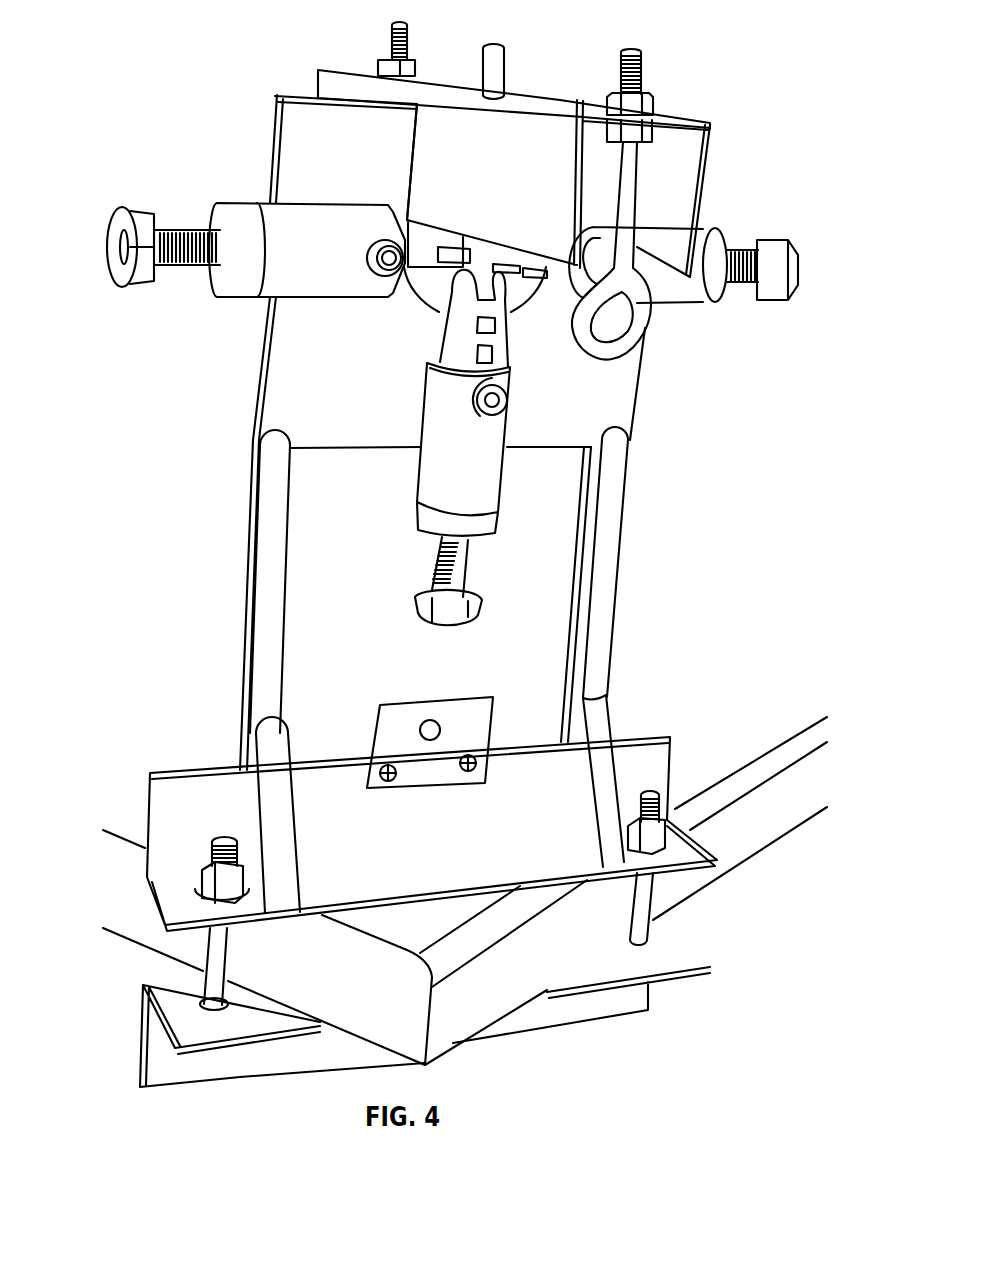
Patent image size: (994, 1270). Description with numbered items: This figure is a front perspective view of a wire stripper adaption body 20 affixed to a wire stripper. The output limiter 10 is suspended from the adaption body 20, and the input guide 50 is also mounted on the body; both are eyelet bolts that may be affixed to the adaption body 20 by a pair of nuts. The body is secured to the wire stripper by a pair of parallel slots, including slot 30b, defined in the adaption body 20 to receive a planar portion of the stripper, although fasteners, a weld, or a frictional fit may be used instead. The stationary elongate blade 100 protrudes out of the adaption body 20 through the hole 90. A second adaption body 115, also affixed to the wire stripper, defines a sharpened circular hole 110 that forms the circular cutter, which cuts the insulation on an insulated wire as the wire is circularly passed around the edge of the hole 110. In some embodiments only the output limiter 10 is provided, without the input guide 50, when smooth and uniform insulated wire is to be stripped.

The output limiter 10 is at (637, 73).
The adaption body 20 is at (467, 173).
The parallel slot 30b is at (408, 166).
The input guide 50 is at (407, 38).
The hole 90 is at (472, 92).
The stationary elongate blade 100 is at (498, 70).
The sharpened circular hole 110 is at (440, 728).
The second adaption body 115 is at (390, 733).